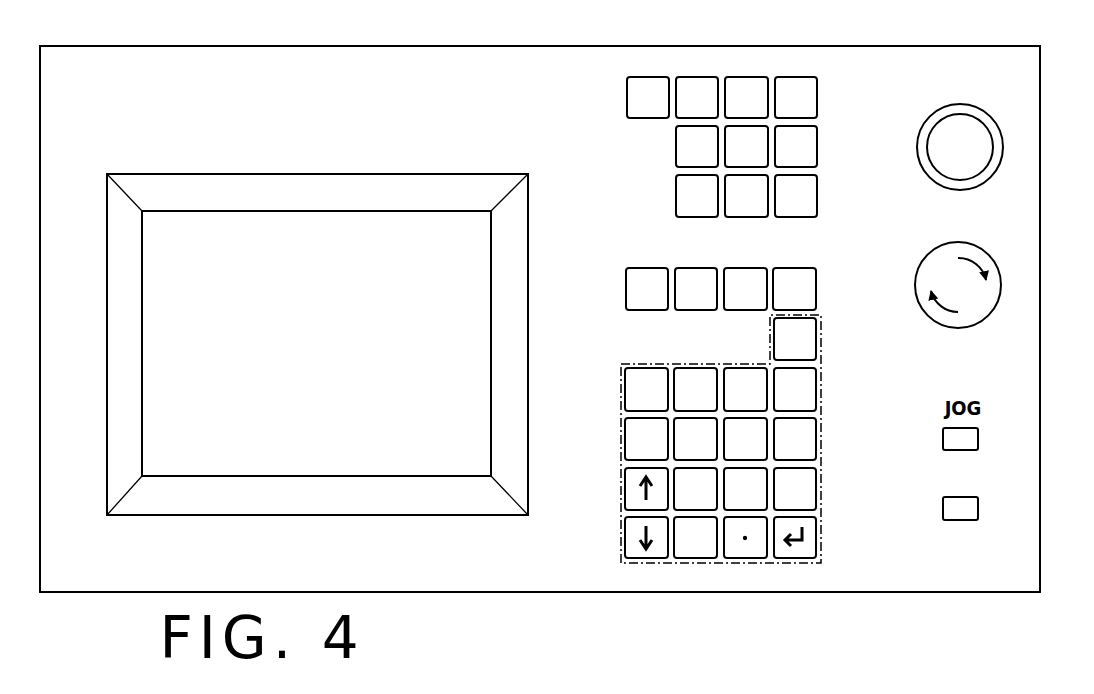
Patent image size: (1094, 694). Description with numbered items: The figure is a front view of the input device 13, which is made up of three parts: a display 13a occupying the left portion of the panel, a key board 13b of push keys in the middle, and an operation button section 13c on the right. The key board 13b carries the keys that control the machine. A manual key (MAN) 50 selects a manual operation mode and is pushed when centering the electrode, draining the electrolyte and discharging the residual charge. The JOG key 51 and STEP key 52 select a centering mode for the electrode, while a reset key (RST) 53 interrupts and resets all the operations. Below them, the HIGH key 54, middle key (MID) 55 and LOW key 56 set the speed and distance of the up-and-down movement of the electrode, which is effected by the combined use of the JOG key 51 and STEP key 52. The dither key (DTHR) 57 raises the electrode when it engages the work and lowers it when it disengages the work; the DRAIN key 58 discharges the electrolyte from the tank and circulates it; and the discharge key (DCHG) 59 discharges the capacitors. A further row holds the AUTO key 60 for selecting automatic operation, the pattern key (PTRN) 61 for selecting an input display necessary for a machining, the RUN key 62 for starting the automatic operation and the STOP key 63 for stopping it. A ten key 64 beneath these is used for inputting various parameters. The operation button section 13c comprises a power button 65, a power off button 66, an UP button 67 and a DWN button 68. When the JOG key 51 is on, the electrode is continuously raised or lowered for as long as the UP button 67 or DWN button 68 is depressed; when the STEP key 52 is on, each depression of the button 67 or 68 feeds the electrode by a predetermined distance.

The input device 13 is at (650, 42).
The display 13a is at (354, 225).
The key board 13b is at (600, 545).
The operation button section 13c is at (1000, 350).
The manual key 50 is at (627, 95).
The JOG key 51 is at (696, 77).
The STEP key 52 is at (745, 77).
The reset key 53 is at (817, 97).
The HIGH key 54 is at (676, 138).
The middle key 55 is at (735, 162).
The LOW key 56 is at (817, 155).
The dither key 57 is at (676, 208).
The DRAIN key 58 is at (737, 217).
The discharge key 59 is at (795, 217).
The AUTO key 60 is at (647, 310).
The pattern key 61 is at (702, 310).
The RUN key 62 is at (757, 310).
The STOP key 63 is at (816, 284).
The ten key 64 is at (821, 423).
The power button 65 is at (980, 106).
The power off button 66 is at (983, 243).
The UP button 67 is at (943, 447).
The DWN button 68 is at (943, 518).